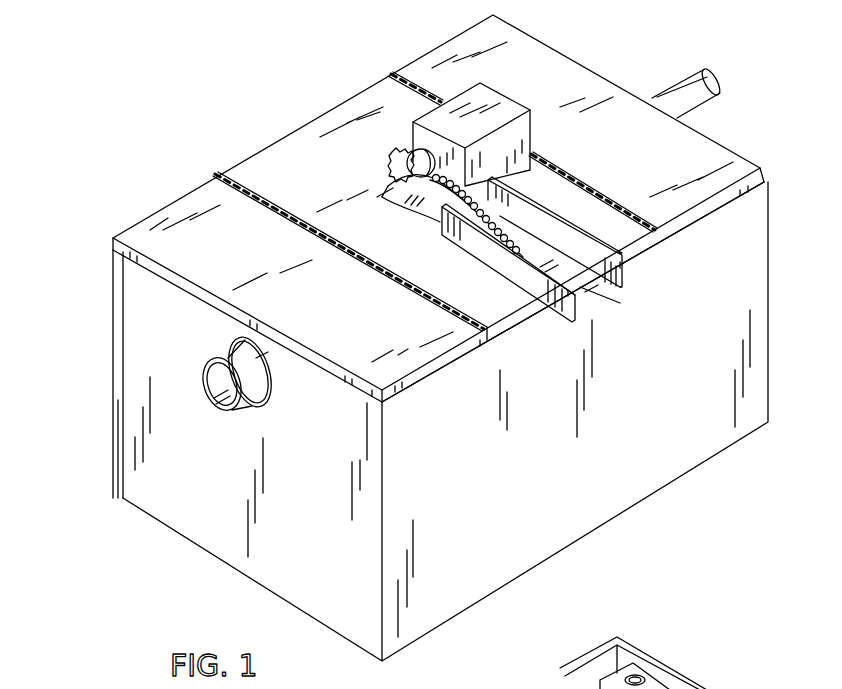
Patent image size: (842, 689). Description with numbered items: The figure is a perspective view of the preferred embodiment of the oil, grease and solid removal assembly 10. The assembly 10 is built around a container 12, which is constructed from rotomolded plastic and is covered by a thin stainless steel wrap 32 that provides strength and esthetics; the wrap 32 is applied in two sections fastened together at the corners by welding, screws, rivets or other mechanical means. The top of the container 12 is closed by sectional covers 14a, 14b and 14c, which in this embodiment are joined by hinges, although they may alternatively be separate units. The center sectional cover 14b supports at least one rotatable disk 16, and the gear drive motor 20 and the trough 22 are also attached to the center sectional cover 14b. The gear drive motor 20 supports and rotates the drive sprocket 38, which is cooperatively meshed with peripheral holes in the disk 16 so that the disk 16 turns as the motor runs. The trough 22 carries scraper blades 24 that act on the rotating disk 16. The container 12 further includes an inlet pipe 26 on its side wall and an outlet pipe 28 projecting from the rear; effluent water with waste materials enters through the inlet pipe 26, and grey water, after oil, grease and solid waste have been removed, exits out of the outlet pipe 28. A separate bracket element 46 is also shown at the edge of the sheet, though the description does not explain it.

The oil, grease and solid removal assembly 10 is at (165, 55).
The container 12 is at (765, 172).
The sectional cover 14a is at (392, 334).
The center sectional cover 14b is at (483, 283).
The sectional cover 14c is at (680, 168).
The rotatable disk 16 is at (397, 207).
The gear drive motor 20 is at (413, 115).
The trough 22 is at (615, 300).
The scraper blades 24 is at (622, 254).
The inlet pipe 26 is at (220, 353).
The outlet pipe 28 is at (690, 74).
The stainless steel wrap 32 is at (545, 443).
The drive sprocket 38 is at (392, 157).
The bracket 46 is at (612, 675).